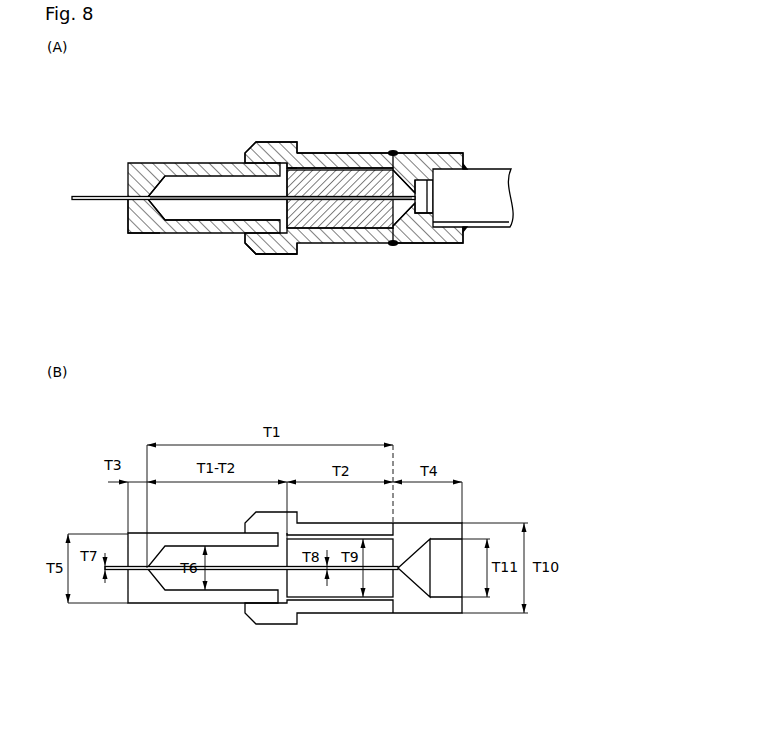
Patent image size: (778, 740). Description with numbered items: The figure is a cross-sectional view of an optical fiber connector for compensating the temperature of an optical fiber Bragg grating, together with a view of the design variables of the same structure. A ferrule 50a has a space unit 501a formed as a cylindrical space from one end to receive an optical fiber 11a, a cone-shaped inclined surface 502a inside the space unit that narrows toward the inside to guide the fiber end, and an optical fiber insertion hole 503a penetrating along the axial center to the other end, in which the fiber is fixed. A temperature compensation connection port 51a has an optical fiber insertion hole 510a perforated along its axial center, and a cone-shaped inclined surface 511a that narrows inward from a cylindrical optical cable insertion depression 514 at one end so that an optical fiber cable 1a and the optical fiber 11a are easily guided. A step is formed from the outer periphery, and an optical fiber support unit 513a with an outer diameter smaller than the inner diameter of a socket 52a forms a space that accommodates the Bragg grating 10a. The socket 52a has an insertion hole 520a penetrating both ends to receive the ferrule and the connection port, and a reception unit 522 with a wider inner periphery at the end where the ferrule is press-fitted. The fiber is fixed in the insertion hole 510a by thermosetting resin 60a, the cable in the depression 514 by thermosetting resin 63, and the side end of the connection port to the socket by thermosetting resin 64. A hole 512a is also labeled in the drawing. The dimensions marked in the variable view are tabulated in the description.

The optical fiber cable 1a is at (490, 168).
The Bragg grating 10a is at (214, 203).
The optical fiber 11a is at (91, 194).
The ferrule 50a is at (135, 161).
The space unit 501a is at (185, 222).
The inclined surface 502a is at (140, 233).
The optical fiber insertion hole 503a is at (151, 178).
The temperature compensation connection port 51a is at (411, 153).
The optical fiber insertion hole 510a is at (377, 232).
The inclined surface 511a is at (420, 232).
The housing inner bore 512a is at (283, 162).
The optical fiber support unit 513a is at (322, 215).
The optical cable insertion depression 514 is at (446, 152).
The socket 52a is at (258, 143).
The insertion hole 520a is at (343, 160).
The reception unit 522 is at (255, 255).
The thermosetting resin 60a is at (283, 234).
The thermosetting resin 63 is at (467, 231).
The thermosetting resin 64 is at (393, 248).